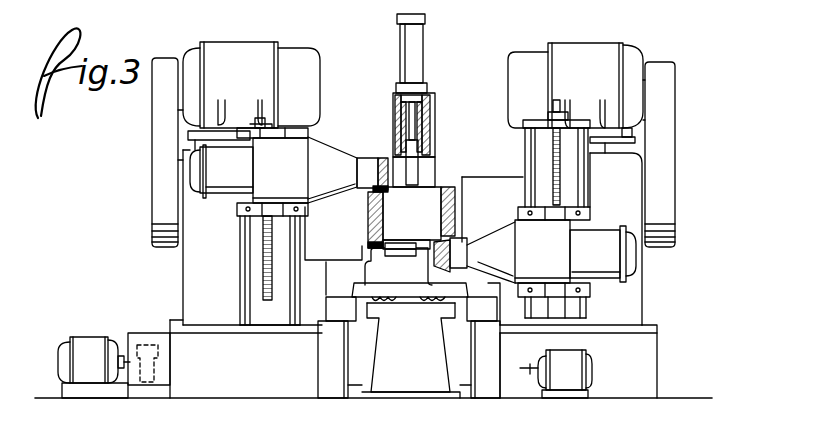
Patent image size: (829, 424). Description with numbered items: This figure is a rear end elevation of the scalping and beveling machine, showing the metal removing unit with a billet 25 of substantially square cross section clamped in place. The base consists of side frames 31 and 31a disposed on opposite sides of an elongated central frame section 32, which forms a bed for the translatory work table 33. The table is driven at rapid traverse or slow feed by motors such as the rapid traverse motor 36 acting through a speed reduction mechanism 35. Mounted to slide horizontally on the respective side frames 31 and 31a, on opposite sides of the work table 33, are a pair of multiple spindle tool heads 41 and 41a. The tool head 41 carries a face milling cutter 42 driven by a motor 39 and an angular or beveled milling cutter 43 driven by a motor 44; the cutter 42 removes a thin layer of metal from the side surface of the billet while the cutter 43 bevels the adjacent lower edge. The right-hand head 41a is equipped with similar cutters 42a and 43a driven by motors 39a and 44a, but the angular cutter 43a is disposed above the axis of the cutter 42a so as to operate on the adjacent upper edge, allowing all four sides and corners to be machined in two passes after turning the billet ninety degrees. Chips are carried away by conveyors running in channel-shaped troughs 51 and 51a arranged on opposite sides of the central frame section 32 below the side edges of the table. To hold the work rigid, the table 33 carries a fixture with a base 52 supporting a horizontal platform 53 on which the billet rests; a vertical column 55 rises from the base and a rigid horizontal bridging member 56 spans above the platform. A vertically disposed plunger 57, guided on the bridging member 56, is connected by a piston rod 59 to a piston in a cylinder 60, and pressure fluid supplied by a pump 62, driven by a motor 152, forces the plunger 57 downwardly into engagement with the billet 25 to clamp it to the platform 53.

The billet 25 is at (432, 196).
The side frame 31 is at (657, 356).
The side frame 31a is at (172, 322).
The central frame section 32 is at (386, 355).
The work table 33 is at (400, 283).
The speed reduction mechanism 35 is at (505, 396).
The rapid traverse motor 36 is at (598, 380).
The motor 39 is at (597, 48).
The motor 39a is at (245, 45).
The multiple spindle tool head 41 is at (640, 190).
The multiple spindle tool head 41a is at (190, 274).
The face milling cutter 42 is at (456, 204).
The face milling cutter 42a is at (366, 226).
The angular milling cutter 43 is at (432, 245).
The angular milling cutter 43a is at (382, 158).
The motor 44 is at (603, 280).
The motor 44a is at (228, 193).
The trough 51 is at (470, 312).
The trough 51a is at (335, 321).
The fixture base 52 is at (370, 272).
The platform 53 is at (414, 248).
The vertical column 55 is at (430, 170).
The bridging member 56 is at (434, 105).
The plunger 57 is at (418, 146).
The piston rod 59 is at (394, 112).
The cylinder 60 is at (400, 40).
The pressure fluid pump 62 is at (160, 354).
The motor 152 is at (92, 340).